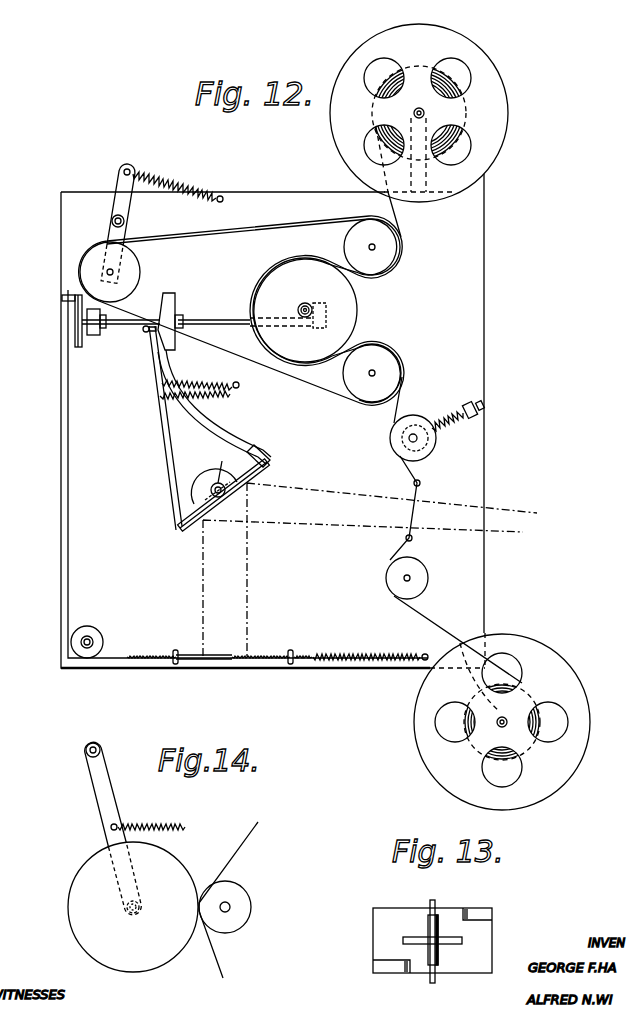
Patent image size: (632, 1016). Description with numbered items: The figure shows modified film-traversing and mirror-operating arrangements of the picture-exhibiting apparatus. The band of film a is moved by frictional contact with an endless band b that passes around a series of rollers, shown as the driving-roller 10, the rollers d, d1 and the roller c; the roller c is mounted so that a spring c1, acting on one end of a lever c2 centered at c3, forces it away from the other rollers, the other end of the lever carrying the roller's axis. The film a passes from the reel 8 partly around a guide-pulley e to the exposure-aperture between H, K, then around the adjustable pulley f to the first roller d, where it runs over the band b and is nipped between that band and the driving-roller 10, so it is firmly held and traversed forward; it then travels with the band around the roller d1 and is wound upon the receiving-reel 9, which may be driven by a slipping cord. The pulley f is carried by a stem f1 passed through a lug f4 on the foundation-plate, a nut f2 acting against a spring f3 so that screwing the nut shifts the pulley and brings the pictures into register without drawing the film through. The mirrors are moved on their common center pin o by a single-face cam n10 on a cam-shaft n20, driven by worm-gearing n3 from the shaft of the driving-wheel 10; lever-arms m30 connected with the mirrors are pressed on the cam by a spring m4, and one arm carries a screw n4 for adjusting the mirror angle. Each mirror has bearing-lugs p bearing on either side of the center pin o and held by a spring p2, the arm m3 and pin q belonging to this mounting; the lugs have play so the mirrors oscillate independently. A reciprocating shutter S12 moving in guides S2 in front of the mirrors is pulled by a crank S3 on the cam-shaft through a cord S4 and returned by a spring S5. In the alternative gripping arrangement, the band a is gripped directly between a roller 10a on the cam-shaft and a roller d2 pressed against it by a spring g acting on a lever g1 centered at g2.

In FIG. 12, the receiving-reel 9 is at (419, 113).
In FIG. 12, the reel 8 is at (502, 722).
In FIG. 12, the driving-roller 10 is at (305, 310).
In FIG. 12, the roller c is at (110, 272).
In FIG. 12, the spring c1 is at (192, 186).
In FIG. 12, the lever c2 is at (117, 207).
In FIG. 12, the lever center c3 is at (126, 221).
In FIG. 12, the endless band b is at (329, 395).
In FIG. 12, the roller d1 is at (372, 247).
In FIG. 12, the first roller d is at (393, 380).
In FIG. 12, the worm-gearing n3 is at (311, 326).
In FIG. 12, the screw n4 is at (140, 335).
In FIG. 12, the single-face cam n10 is at (176, 306).
In FIG. 12, the cam-shaft n20 is at (215, 322).
In FIG. 12, the crank S3 is at (65, 302).
In FIG. 12, the cord S4 is at (70, 511).
In FIG. 12, the guides S2 is at (299, 640).
In FIG. 12, the reciprocating shutter S12 is at (219, 645).
In FIG. 12, the spring S5 is at (362, 653).
In FIG. 12, the arm m3 is at (232, 433).
In FIG. 13, the arm m3 is at (373, 967).
In FIG. 12, the lever-arms m30 is at (170, 453).
In FIG. 12, the spring m4 is at (232, 391).
In FIG. 12, the bearing-lugs p is at (217, 502).
In FIG. 13, the bearing-lugs p is at (455, 987).
In FIG. 12, the spring p2 is at (207, 478).
In FIG. 13, the spring p2 is at (455, 948).
In FIG. 12, the pin q is at (218, 472).
In FIG. 12, the band of film a is at (437, 623).
In FIG. 14, the band of film a is at (217, 960).
In FIG. 12, the adjustable pulley f is at (404, 449).
In FIG. 12, the stem f1 is at (433, 435).
In FIG. 12, the nut f2 is at (480, 400).
In FIG. 12, the spring f3 is at (443, 418).
In FIG. 12, the lug f4 is at (487, 427).
In FIG. 12, the exposure-aperture edge K is at (420, 483).
In FIG. 12, the exposure-aperture edge H is at (412, 538).
In FIG. 12, the guide-pulley e is at (390, 577).
In FIG. 14, the roller d2 is at (133, 907).
In FIG. 14, the lever g1 is at (110, 787).
In FIG. 14, the lever center g2 is at (86, 748).
In FIG. 14, the spring g is at (182, 822).
In FIG. 14, the roller 10a is at (238, 897).
In FIG. 13, the center pin o is at (430, 985).